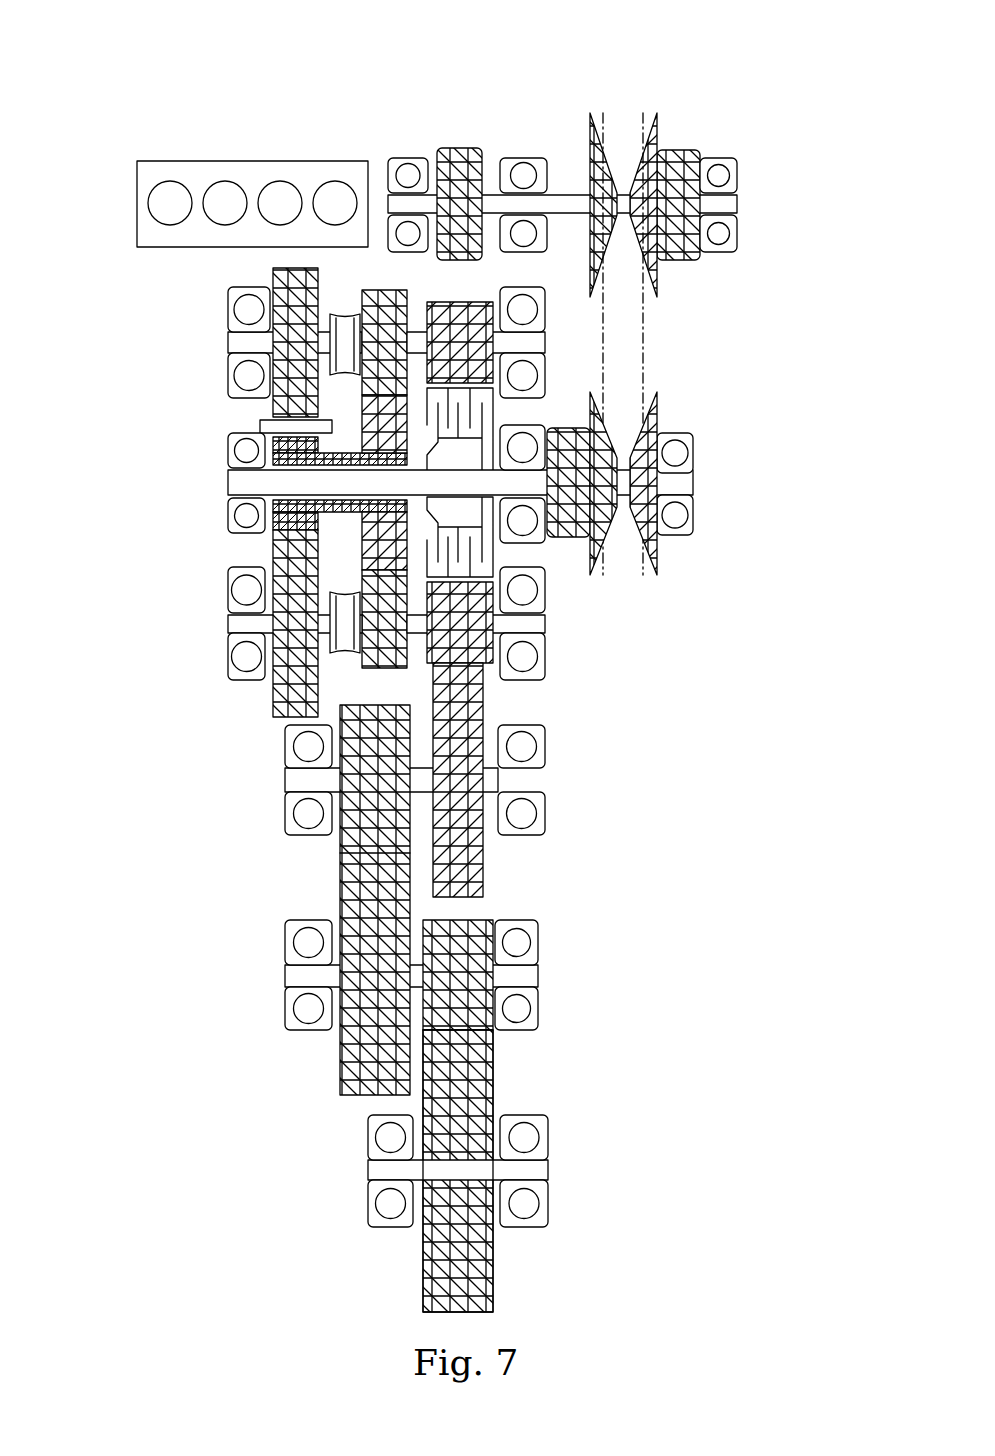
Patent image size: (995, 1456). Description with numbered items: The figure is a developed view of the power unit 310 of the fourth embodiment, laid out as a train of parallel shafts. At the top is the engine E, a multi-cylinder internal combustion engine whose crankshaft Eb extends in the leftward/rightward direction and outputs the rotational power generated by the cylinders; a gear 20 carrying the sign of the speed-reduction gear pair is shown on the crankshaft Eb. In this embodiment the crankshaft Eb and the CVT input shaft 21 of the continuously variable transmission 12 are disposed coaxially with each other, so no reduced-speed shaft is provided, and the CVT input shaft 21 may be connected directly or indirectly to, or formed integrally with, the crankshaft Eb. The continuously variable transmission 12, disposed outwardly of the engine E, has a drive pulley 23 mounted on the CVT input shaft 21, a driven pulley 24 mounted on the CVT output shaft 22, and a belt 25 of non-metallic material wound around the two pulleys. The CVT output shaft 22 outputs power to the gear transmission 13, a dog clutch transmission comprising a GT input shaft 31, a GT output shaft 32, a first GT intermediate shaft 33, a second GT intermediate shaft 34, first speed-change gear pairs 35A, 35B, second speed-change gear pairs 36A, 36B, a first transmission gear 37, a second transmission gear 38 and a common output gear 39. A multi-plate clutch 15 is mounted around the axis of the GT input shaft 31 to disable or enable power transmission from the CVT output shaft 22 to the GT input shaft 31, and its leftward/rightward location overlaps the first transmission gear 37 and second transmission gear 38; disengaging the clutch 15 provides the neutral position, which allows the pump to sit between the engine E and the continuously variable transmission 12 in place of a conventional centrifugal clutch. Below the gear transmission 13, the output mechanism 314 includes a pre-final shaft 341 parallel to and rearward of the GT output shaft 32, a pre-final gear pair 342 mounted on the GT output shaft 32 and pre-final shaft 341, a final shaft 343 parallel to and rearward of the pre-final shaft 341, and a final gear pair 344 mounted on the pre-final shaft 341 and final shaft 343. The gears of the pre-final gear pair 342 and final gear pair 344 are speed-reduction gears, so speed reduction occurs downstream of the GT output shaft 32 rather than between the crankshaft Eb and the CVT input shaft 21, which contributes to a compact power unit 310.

The power unit 310 is at (777, 105).
The engine E is at (160, 160).
The speed-reduction gear pair 20 is at (458, 160).
The crankshaft Eb is at (495, 200).
The drive pulley 23 is at (648, 150).
The CVT input shaft 21 is at (740, 203).
The continuously variable transmission 12 is at (785, 288).
The first speed-change gear pair 35B is at (283, 268).
The first GT intermediate shaft 33 is at (237, 340).
The first transmission gear 37 is at (490, 310).
The belt 25 is at (643, 357).
The first speed-change gear pair 35A is at (378, 385).
The GT input shaft 31 is at (237, 482).
The CVT output shaft 22 is at (695, 485).
The second speed-change gear pair 36A is at (382, 542).
The gear transmission 13 is at (148, 585).
The second GT intermediate shaft 34 is at (237, 622).
The clutch 15 is at (495, 545).
The second transmission gear 38 is at (470, 650).
The driven pulley 24 is at (660, 565).
The second speed-change gear pair 36B is at (265, 690).
The GT output shaft 32 is at (290, 775).
The common output gear 39 is at (475, 860).
The pre-final shaft 341 is at (510, 970).
The output mechanism 314 is at (245, 1012).
The pre-final gear pair 342 is at (345, 1055).
The final shaft 343 is at (530, 1172).
The final gear pair 344 is at (435, 1258).